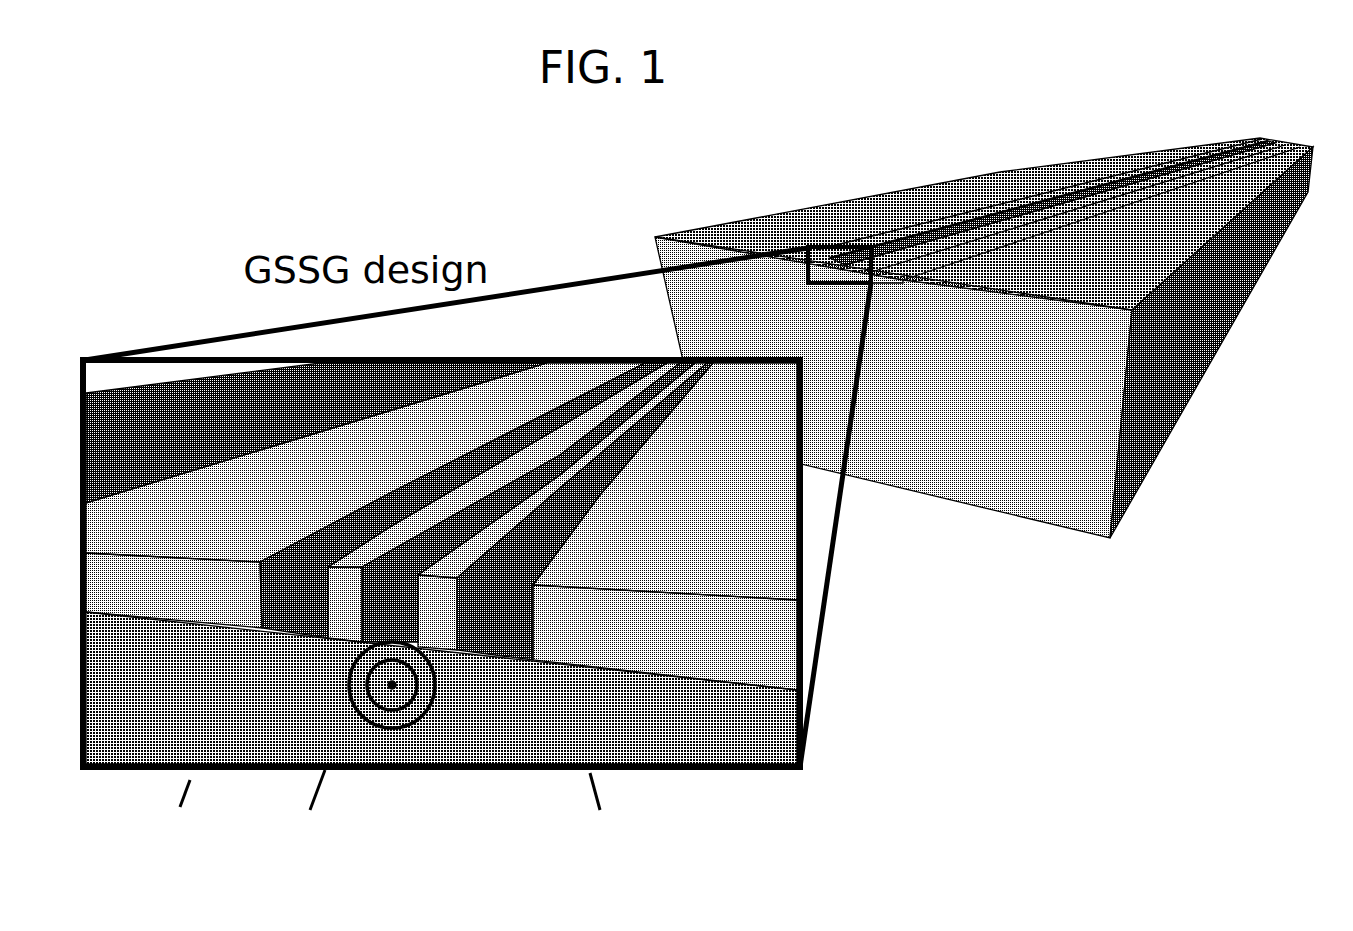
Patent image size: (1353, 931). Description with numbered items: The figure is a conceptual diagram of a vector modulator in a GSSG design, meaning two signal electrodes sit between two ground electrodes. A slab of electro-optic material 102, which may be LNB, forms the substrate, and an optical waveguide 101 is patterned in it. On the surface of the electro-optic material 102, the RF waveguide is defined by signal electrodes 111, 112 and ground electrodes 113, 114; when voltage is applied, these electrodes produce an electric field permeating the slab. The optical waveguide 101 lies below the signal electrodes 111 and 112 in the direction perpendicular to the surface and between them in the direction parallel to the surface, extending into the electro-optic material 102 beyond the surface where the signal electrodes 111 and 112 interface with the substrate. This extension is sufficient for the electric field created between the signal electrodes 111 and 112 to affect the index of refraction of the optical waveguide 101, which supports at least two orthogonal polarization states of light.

The optical waveguide 101 is at (383, 705).
The electro-optic material 102 is at (984, 338).
The signal electrode 111 is at (350, 640).
The signal electrode 112 is at (440, 638).
The ground electrode 113 is at (376, 500).
The ground electrode 114 is at (665, 526).